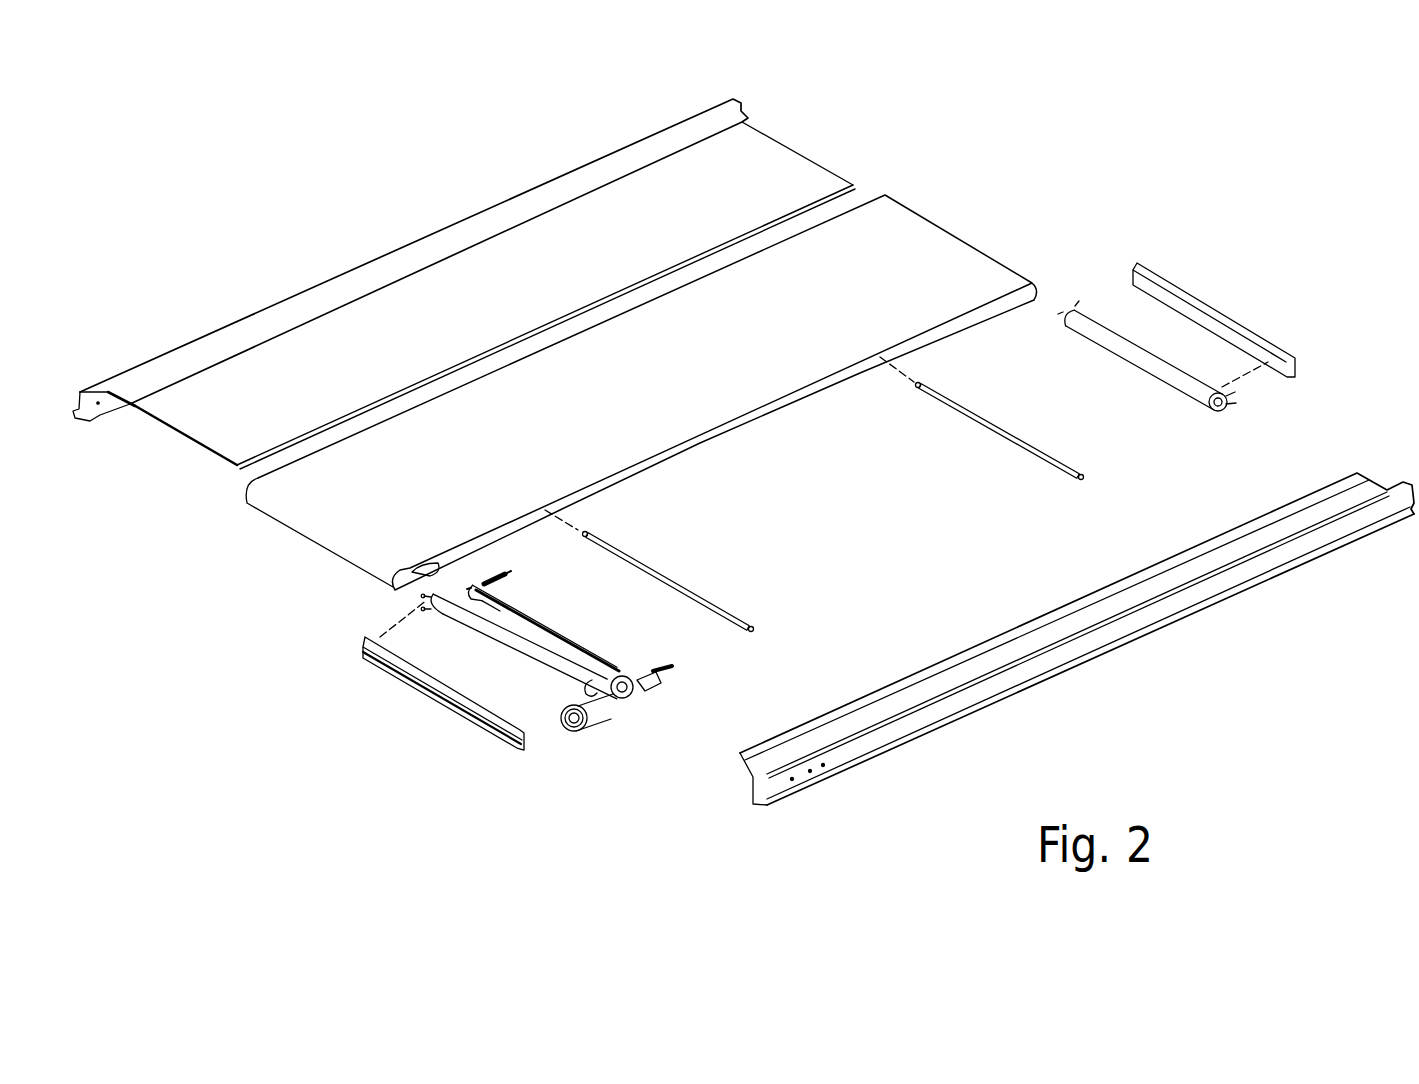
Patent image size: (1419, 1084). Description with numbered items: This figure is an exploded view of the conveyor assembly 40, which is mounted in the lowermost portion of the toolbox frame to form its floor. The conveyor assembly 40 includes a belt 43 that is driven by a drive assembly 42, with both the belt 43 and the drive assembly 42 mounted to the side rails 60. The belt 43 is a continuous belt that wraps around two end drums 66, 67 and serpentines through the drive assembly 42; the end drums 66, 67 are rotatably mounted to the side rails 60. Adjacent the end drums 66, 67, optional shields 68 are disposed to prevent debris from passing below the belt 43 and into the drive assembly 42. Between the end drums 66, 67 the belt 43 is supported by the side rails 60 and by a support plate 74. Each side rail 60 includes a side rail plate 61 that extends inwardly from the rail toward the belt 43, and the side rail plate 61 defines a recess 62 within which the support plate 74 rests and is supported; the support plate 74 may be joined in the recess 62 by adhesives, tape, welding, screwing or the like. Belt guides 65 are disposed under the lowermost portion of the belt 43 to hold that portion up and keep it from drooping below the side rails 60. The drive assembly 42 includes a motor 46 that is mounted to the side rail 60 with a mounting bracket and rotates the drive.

The conveyor assembly 40 is at (355, 713).
The drive assembly 42 is at (500, 663).
The belt 43 is at (883, 247).
The motor 46 is at (593, 718).
The side rails 60 is at (352, 280).
The side rail plate 61 is at (131, 405).
The recess 62 is at (131, 403).
The belt guides 65 is at (665, 578).
The end drum 66 is at (484, 627).
The end drum 67 is at (1125, 352).
The shields 68 is at (1212, 305).
The support plate 74 is at (260, 430).